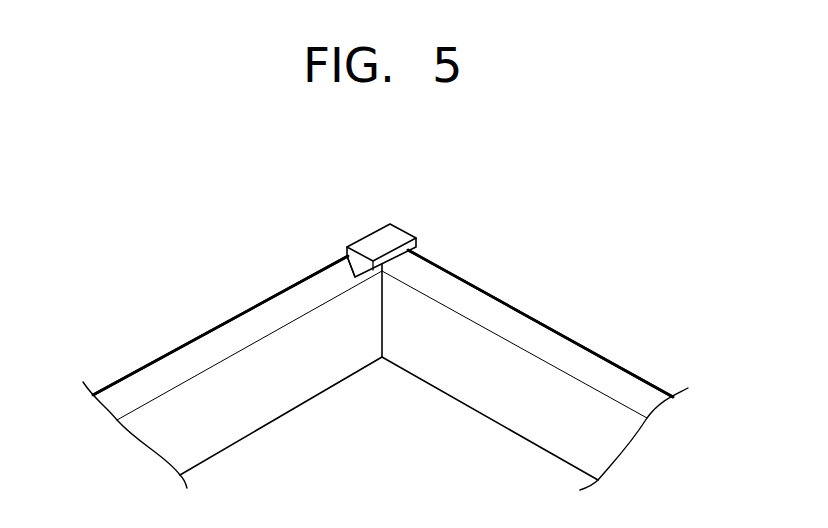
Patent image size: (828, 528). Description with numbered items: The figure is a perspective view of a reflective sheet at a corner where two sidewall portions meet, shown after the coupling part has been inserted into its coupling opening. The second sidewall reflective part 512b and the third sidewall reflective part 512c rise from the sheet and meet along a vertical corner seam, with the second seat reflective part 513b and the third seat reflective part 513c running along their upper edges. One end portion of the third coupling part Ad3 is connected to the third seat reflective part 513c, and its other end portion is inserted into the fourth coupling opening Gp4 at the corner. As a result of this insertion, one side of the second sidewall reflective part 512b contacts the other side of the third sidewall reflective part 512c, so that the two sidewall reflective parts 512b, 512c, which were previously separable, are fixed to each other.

The second sidewall reflective part 512b is at (218, 377).
The third sidewall reflective part 512c is at (473, 338).
The second seat reflective part 513b is at (283, 305).
The third seat reflective part 513c is at (547, 343).
The third coupling part Ad3 is at (372, 248).
The fourth coupling opening Gp4 is at (345, 262).